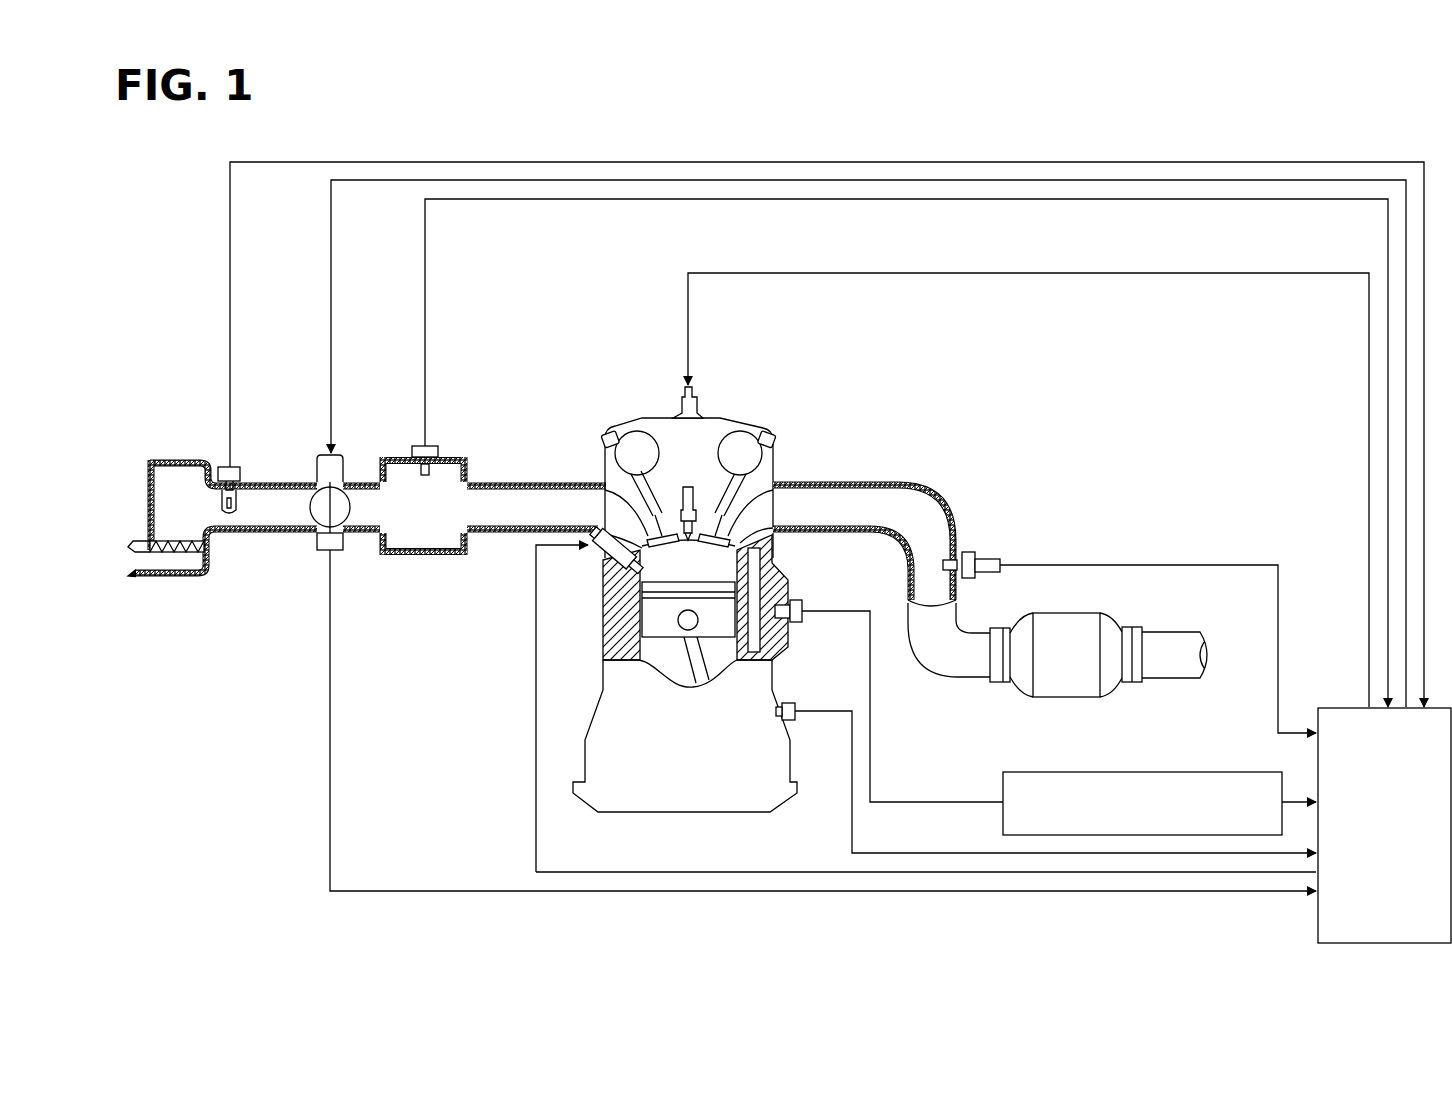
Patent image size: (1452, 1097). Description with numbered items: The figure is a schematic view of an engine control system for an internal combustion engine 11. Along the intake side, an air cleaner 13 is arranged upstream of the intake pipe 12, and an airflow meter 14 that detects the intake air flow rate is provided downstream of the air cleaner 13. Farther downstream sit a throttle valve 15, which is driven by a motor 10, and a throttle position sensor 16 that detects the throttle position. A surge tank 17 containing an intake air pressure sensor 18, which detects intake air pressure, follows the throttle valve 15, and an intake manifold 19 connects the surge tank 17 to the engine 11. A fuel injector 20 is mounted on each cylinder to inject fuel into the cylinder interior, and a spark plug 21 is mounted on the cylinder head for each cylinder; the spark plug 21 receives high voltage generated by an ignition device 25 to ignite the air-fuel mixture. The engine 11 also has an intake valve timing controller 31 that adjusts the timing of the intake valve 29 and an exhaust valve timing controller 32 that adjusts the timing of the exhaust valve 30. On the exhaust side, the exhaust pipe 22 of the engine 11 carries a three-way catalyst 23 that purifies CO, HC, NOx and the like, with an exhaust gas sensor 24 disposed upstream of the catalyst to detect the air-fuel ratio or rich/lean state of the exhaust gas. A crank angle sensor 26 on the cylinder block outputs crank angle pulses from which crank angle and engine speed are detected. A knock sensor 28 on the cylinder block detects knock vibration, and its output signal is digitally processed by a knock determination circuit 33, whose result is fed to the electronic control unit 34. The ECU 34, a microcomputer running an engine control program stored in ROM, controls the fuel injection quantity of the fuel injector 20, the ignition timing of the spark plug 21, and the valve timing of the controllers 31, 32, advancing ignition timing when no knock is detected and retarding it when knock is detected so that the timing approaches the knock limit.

The motor 10 is at (357, 452).
The internal combustion engine 11 is at (742, 425).
The intake pipe 12 is at (270, 481).
The air cleaner 13 is at (170, 553).
The airflow meter 14 is at (222, 464).
The throttle valve 15 is at (340, 508).
The throttle position sensor 16 is at (320, 552).
The surge tank 17 is at (388, 455).
The intake air pressure sensor 18 is at (453, 446).
The intake manifold 19 is at (515, 482).
The fuel injector 20 is at (605, 570).
The spark plug 21 is at (708, 470).
The exhaust pipe 22 is at (892, 483).
The three-way catalyst 23 is at (1083, 612).
The exhaust gas sensor 24 is at (968, 552).
The ignition device 25 is at (680, 402).
The crank angle sensor 26 is at (793, 703).
The knock sensor 28 is at (803, 600).
The intake valve 29 is at (603, 528).
The exhaust valve 30 is at (770, 510).
The intake valve timing controller 31 is at (638, 428).
The exhaust valve timing controller 32 is at (752, 432).
The knock determination circuit 33 is at (1142, 770).
The electronic control unit (ECU) 34 is at (1318, 920).